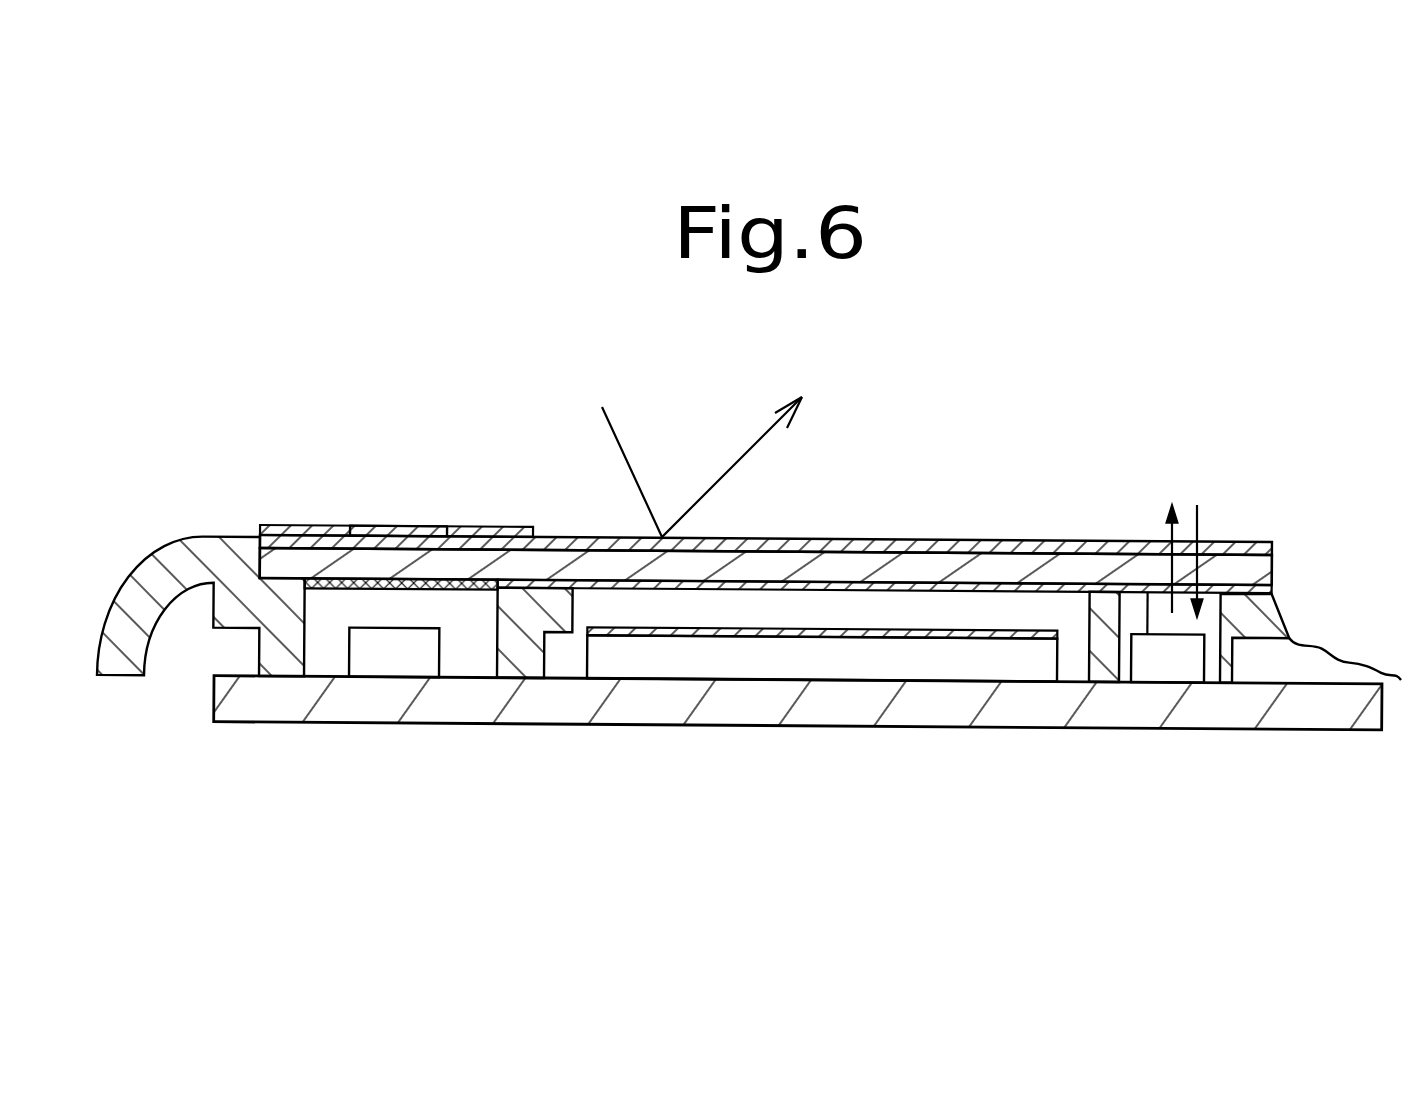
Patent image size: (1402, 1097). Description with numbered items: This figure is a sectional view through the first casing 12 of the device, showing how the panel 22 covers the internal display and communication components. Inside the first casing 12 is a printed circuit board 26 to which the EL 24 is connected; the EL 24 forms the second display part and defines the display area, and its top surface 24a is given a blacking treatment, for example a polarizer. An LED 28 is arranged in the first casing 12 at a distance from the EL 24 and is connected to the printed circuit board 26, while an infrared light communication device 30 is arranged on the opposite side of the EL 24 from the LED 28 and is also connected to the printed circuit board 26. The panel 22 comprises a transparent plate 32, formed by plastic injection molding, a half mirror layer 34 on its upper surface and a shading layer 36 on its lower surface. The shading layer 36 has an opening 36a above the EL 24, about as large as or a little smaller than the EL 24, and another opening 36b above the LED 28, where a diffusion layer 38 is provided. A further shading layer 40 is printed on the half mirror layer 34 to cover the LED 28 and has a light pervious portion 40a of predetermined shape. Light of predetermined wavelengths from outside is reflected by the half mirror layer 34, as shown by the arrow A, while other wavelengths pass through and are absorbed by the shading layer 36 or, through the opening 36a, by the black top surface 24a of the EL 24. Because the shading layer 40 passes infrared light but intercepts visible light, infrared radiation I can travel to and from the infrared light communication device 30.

The first casing 12 is at (193, 535).
The panel 22 is at (1250, 545).
The EL 24 is at (930, 665).
The top surface of the EL 24a is at (835, 640).
The printed circuit board 26 is at (1012, 700).
The LED 28 is at (395, 660).
The infrared light communication device 30 is at (1165, 662).
The transparent plate 32 is at (1040, 565).
The half mirror layer 34 is at (1112, 548).
The shading layer 36 is at (1077, 593).
The opening 36a is at (690, 590).
The opening 36b is at (482, 592).
The diffusion layer 38 is at (332, 590).
The shading layer 40 is at (300, 528).
The light pervious portion 40a is at (395, 528).
The arrow A is at (724, 478).
The infrared radiation I is at (1186, 530).